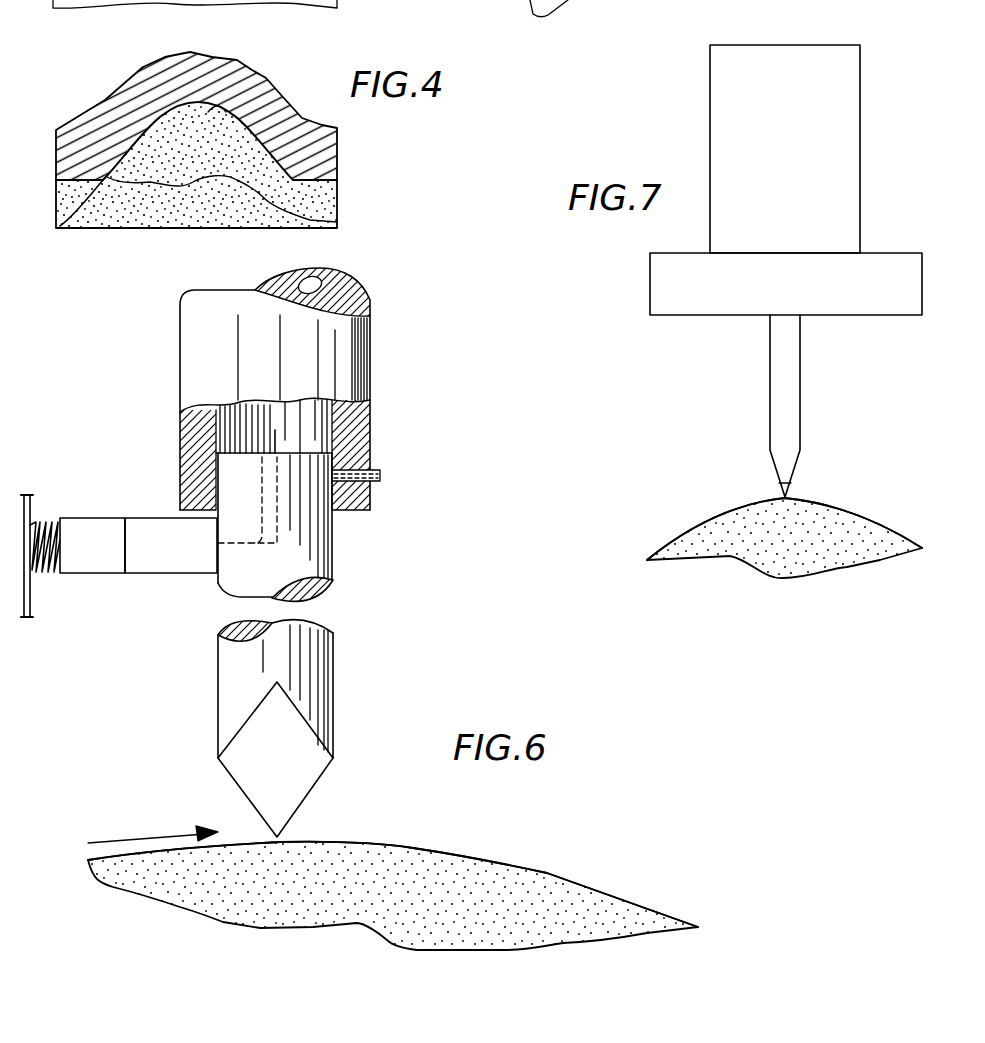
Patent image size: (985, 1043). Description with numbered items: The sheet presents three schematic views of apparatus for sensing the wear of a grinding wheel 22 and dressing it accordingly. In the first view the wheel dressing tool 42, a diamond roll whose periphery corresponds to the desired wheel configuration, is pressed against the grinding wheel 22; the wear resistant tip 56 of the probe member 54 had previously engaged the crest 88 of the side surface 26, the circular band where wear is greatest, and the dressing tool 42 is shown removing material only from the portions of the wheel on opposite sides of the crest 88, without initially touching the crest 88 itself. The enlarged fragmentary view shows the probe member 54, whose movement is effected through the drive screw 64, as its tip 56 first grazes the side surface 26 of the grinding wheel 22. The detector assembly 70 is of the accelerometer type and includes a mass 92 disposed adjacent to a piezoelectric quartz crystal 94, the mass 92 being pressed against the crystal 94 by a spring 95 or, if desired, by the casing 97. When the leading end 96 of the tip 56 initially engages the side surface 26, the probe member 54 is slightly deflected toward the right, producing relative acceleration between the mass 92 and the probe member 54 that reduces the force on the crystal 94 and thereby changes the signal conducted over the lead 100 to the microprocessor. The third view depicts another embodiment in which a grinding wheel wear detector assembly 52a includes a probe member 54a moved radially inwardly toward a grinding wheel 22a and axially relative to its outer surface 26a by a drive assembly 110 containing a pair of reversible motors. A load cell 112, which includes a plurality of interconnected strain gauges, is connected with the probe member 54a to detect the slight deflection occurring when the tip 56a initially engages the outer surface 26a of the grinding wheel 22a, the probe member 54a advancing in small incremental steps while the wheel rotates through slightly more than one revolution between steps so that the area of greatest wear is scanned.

In FIG. 4, the grinding wheel 22 is at (345, 208).
In FIG. 6, the grinding wheel 22 is at (360, 975).
In FIG. 4, the side surface 26 is at (290, 145).
In FIG. 6, the side surface 26 is at (538, 872).
In FIG. 4, the wheel dressing tool 42 is at (56, 150).
In FIG. 4, the crest 88 is at (230, 108).
In FIG. 6, the drive screw 64 is at (348, 358).
In FIG. 6, the probe member 54 is at (323, 657).
In FIG. 6, the tip 56 is at (290, 792).
In FIG. 6, the detector assembly 70 is at (140, 485).
In FIG. 6, the mass 92 is at (88, 565).
In FIG. 6, the quartz crystal 94 is at (167, 572).
In FIG. 6, the spring 95 is at (48, 522).
In FIG. 6, the leading end 96 is at (273, 835).
In FIG. 6, the casing 97 is at (26, 495).
In FIG. 6, the lead 100 is at (275, 430).
In FIG. 7, the drive assembly 110 is at (832, 103).
In FIG. 7, the load cell 112 is at (673, 275).
In FIG. 7, the probe member 54a is at (788, 375).
In FIG. 7, the tip 56a is at (793, 485).
In FIG. 7, the grinding wheel wear detector assembly 52a is at (680, 398).
In FIG. 7, the grinding wheel 22a is at (690, 508).
In FIG. 7, the outer surface 26a is at (852, 507).